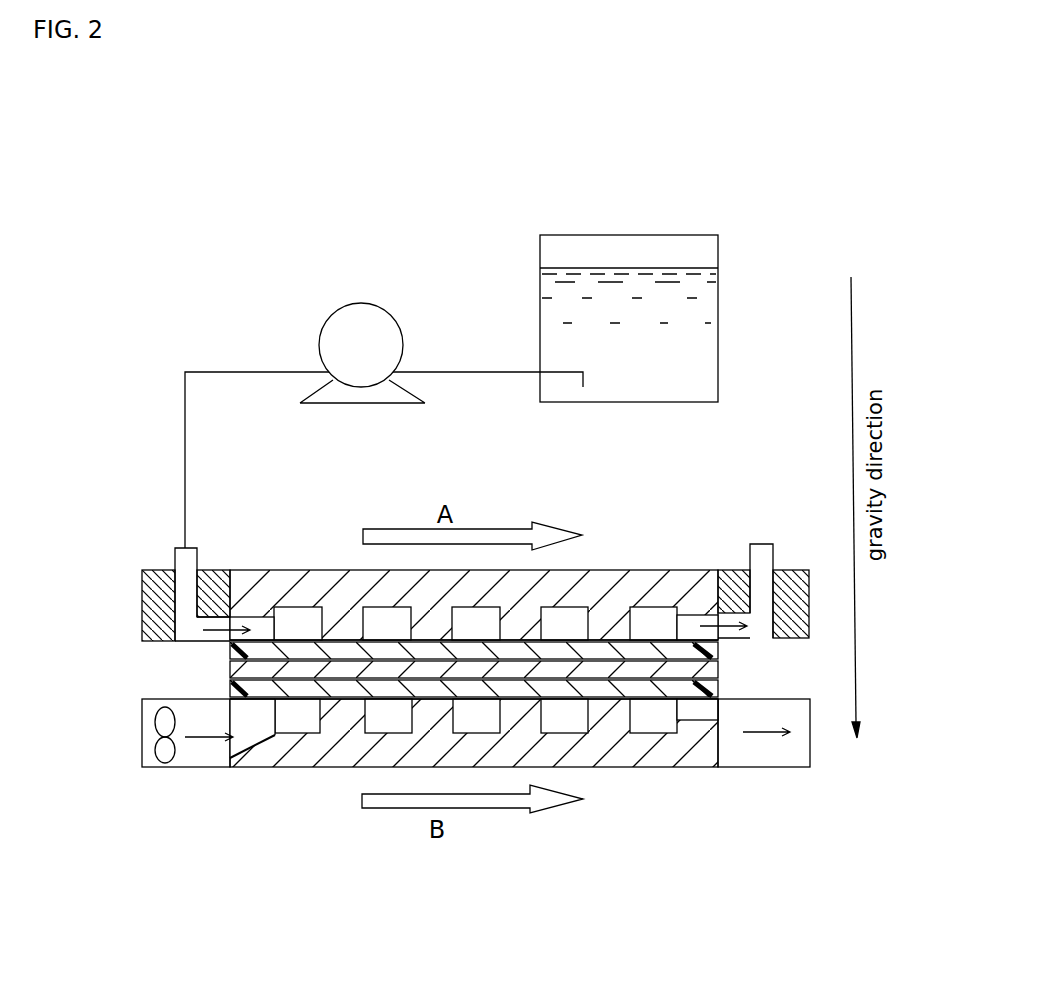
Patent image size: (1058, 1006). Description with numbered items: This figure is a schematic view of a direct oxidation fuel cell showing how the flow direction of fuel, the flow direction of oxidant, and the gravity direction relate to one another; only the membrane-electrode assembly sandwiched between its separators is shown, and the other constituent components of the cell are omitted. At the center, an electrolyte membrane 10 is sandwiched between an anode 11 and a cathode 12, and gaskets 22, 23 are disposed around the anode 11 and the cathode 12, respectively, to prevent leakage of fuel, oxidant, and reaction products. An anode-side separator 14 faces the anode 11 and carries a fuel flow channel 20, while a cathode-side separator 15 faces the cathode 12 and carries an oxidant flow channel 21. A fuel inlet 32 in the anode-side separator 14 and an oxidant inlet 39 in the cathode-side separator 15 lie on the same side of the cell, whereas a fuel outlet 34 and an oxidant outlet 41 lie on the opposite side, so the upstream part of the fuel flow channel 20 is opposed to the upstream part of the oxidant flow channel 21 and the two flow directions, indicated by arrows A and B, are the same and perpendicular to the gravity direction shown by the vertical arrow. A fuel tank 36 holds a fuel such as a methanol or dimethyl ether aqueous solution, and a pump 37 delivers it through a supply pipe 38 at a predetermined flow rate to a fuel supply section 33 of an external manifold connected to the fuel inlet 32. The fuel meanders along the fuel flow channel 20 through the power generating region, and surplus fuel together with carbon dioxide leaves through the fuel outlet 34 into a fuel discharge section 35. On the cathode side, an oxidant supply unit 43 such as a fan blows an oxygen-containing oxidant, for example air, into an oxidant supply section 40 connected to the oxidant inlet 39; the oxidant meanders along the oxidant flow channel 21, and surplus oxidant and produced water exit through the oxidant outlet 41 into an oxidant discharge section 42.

The electrolyte membrane 10 is at (708, 665).
The anode 11 is at (590, 648).
The cathode 12 is at (598, 692).
The anode-side separator 14 is at (630, 585).
The cathode-side separator 15 is at (647, 752).
The fuel flow channel 20 is at (303, 618).
The oxidant flow channel 21 is at (298, 720).
The gasket 22 is at (230, 655).
The gasket 23 is at (230, 692).
The fuel inlet 32 is at (258, 630).
The fuel supply section 33 is at (185, 598).
The fuel outlet 34 is at (690, 622).
The fuel discharge section 35 is at (763, 600).
The fuel tank 36 is at (702, 292).
The pump 37 is at (375, 323).
The supply pipe 38 is at (183, 420).
The oxidant inlet 39 is at (253, 728).
The oxidant supply section 40 is at (190, 753).
The oxidant outlet 41 is at (700, 708).
The oxidant discharge section 42 is at (775, 748).
The oxidant supply unit 43 is at (163, 748).